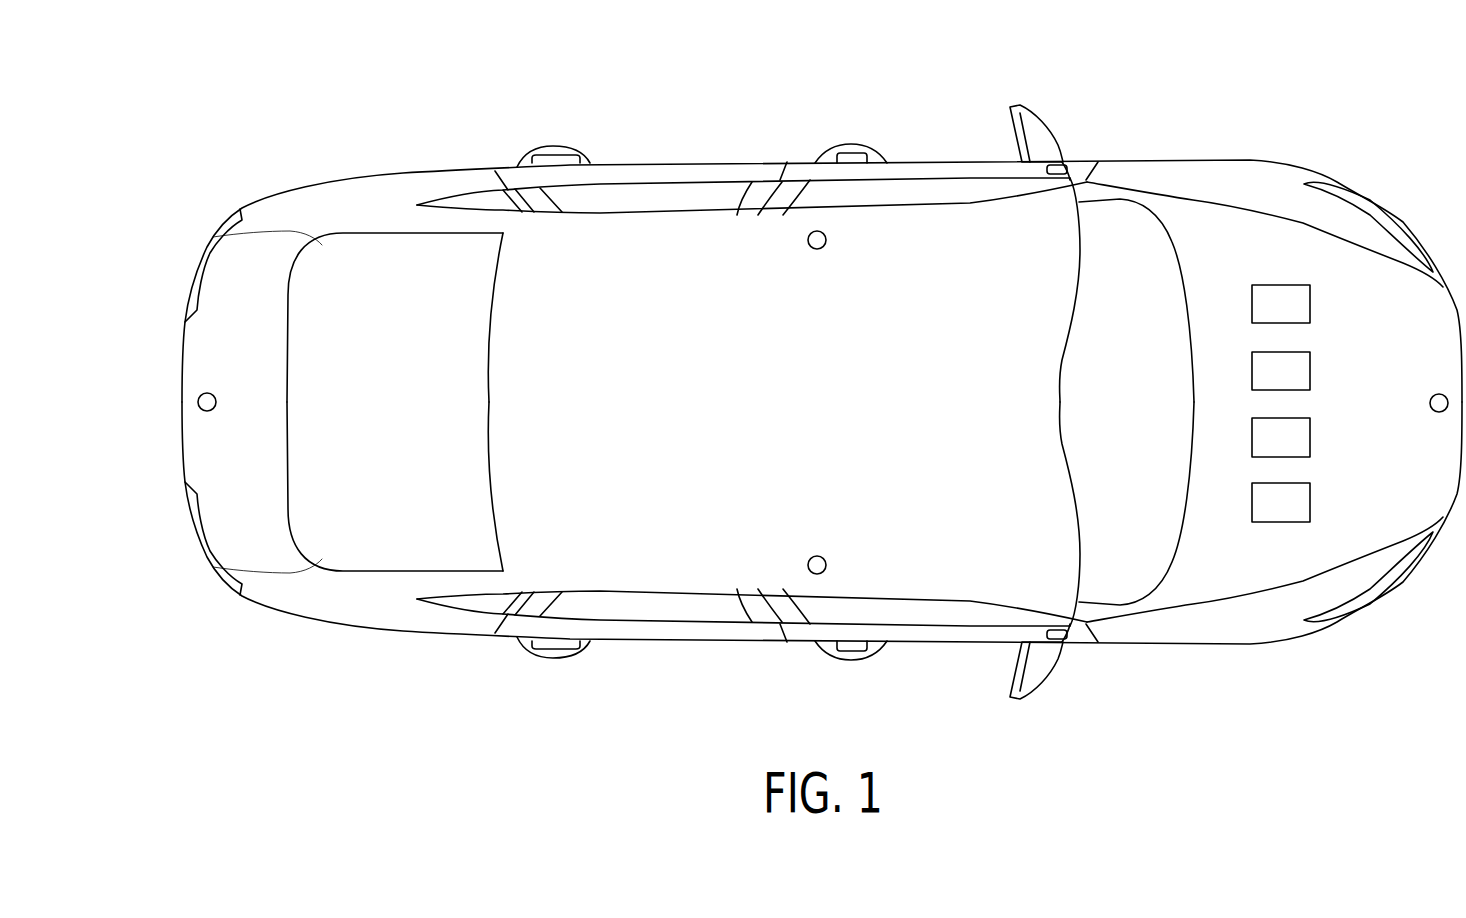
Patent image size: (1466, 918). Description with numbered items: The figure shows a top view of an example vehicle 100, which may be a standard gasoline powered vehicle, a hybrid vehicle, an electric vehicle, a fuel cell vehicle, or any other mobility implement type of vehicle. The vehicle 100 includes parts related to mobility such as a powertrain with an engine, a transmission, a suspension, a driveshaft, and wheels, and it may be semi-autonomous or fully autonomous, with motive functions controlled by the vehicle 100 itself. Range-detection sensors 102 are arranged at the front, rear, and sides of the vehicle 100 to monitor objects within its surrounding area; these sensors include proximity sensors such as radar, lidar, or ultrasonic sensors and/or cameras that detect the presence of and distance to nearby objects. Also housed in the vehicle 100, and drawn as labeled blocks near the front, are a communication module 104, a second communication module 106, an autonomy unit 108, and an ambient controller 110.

The vehicle 100 is at (1208, 160).
The range-detection sensors 102 is at (818, 249).
The communication module 104 is at (1263, 316).
The communication module 106 is at (1263, 383).
The autonomy unit 108 is at (1263, 450).
The ambient controller 110 is at (1263, 515).